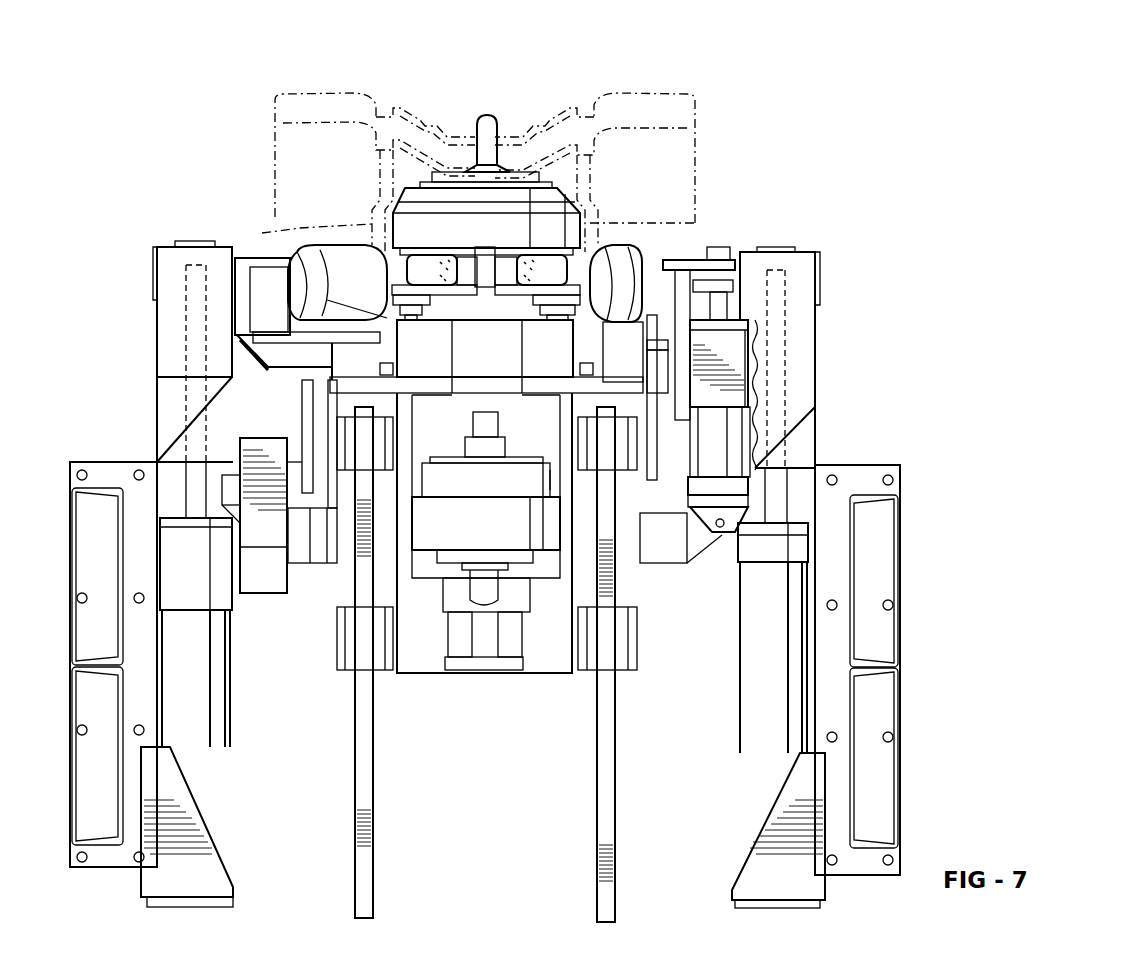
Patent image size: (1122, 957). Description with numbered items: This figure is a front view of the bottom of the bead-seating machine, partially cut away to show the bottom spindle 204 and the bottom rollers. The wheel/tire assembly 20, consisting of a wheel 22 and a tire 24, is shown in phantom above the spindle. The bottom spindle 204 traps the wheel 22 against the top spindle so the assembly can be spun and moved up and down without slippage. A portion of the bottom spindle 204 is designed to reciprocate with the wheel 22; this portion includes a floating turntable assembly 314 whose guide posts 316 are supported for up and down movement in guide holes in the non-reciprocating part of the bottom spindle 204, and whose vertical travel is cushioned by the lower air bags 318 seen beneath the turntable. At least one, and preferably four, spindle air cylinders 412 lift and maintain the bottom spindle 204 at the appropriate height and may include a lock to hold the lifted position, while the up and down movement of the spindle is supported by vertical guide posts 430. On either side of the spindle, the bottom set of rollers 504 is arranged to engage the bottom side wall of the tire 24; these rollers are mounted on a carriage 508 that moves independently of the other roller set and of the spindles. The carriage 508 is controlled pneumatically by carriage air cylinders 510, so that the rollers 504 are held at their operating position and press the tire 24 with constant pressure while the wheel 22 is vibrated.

The wheel/tire assembly 20 is at (700, 108).
The wheel 22 is at (426, 140).
The tire 24 is at (700, 128).
The bottom spindle 204 is at (505, 158).
The floating turntable assembly 314 is at (548, 203).
The guide posts 316 is at (558, 320).
The lower air bags 318 is at (410, 268).
The spindle air cylinder 412 is at (227, 672).
The vertical guide posts 430 is at (373, 765).
The bottom set of rollers 504 is at (373, 291).
The carriage 508 is at (252, 300).
The carriage air cylinders 510 is at (740, 437).